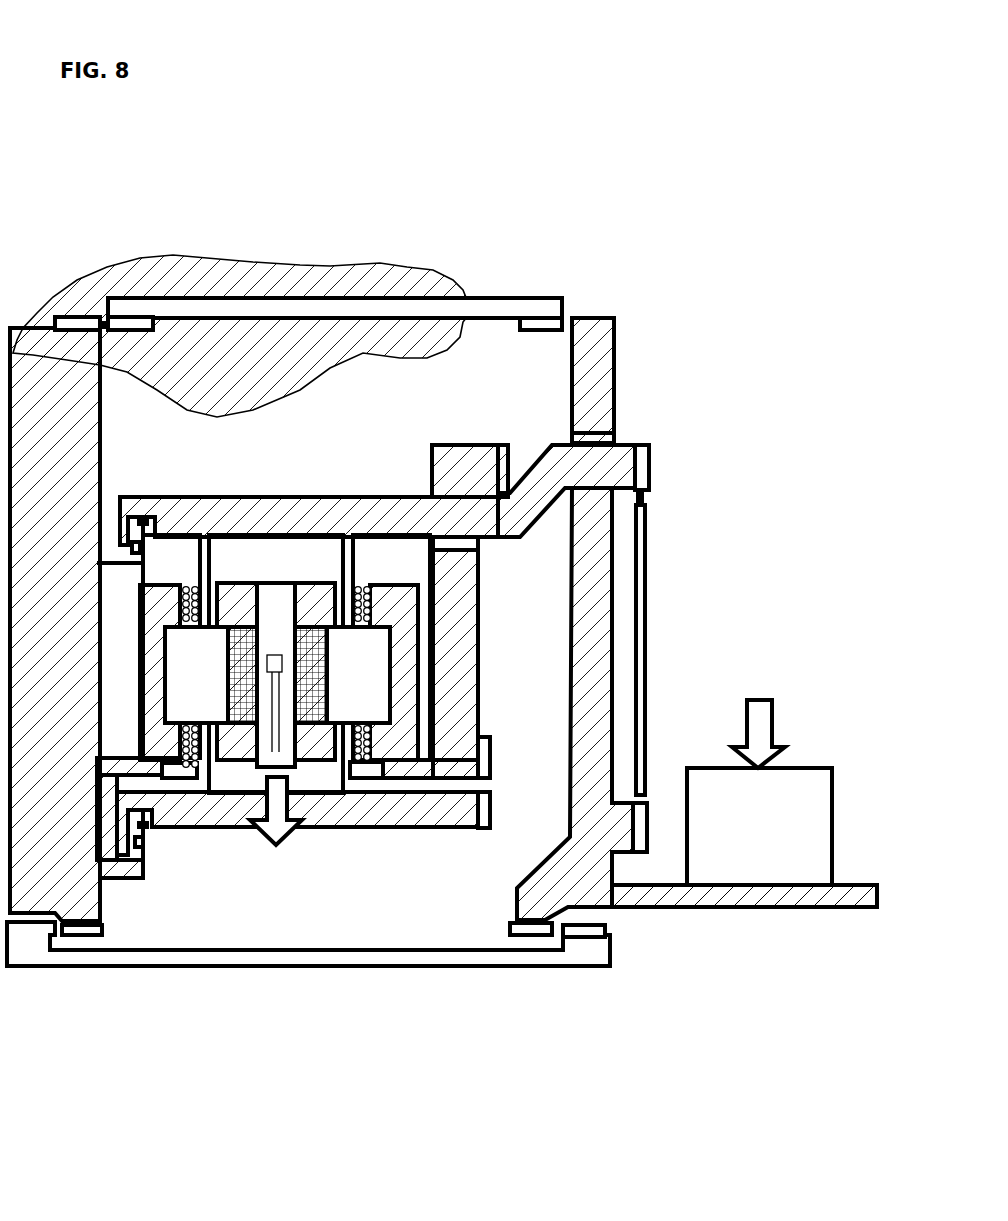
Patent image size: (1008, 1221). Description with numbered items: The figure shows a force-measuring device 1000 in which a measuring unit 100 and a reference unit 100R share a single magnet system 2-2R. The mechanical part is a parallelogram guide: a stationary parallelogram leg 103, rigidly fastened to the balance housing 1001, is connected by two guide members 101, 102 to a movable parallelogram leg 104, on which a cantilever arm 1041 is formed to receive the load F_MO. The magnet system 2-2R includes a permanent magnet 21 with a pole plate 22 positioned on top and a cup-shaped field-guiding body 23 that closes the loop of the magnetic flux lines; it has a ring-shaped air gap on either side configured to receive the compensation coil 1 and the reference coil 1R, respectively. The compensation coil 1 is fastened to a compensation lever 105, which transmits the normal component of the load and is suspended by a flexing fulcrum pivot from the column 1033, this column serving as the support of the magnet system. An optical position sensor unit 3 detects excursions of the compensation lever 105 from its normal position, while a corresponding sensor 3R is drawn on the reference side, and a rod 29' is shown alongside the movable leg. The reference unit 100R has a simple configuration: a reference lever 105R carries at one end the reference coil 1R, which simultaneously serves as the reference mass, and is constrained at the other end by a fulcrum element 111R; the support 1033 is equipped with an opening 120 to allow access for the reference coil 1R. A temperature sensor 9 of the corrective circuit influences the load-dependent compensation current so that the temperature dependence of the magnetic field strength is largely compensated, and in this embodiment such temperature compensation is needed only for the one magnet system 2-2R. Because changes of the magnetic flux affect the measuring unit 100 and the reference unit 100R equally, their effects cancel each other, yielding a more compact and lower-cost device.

The force-measuring device 1000 is at (695, 252).
The balance housing 1001 is at (357, 283).
The guide member 101 is at (492, 305).
The guide member 102 is at (325, 957).
The stationary parallelogram leg 103 is at (68, 422).
The movable parallelogram leg 104 is at (617, 387).
The column 1033 is at (455, 443).
The cantilever arm 1041 is at (857, 885).
The measuring unit 100 is at (360, 478).
The reference unit 100R is at (230, 862).
The compensation lever 105 is at (280, 505).
The reference lever 105R is at (420, 808).
The optical position sensor unit 3 is at (137, 522).
The lower flexure 3R is at (153, 852).
The connecting rod 29' is at (681, 671).
The compensation coil 1 is at (360, 575).
The reference coil 1R is at (358, 717).
The magnet system 2-2R is at (407, 632).
The permanent magnet 21 is at (223, 657).
The pole plate 22 is at (242, 597).
The cup-shaped field-guiding body 23 is at (405, 682).
The temperature sensor 9 is at (276, 675).
The opening 120 is at (368, 773).
The fulcrum element 111R is at (490, 790).